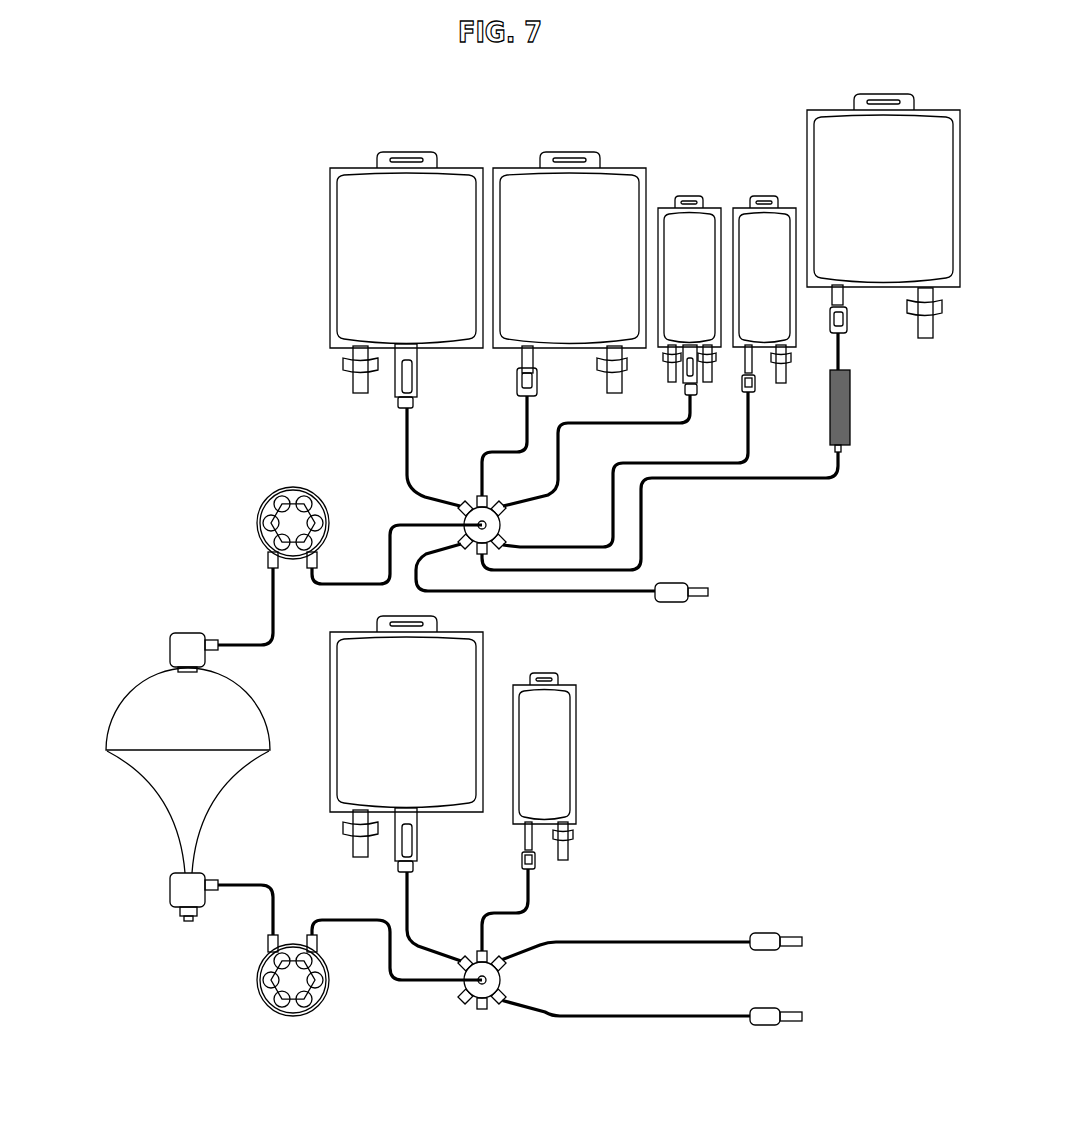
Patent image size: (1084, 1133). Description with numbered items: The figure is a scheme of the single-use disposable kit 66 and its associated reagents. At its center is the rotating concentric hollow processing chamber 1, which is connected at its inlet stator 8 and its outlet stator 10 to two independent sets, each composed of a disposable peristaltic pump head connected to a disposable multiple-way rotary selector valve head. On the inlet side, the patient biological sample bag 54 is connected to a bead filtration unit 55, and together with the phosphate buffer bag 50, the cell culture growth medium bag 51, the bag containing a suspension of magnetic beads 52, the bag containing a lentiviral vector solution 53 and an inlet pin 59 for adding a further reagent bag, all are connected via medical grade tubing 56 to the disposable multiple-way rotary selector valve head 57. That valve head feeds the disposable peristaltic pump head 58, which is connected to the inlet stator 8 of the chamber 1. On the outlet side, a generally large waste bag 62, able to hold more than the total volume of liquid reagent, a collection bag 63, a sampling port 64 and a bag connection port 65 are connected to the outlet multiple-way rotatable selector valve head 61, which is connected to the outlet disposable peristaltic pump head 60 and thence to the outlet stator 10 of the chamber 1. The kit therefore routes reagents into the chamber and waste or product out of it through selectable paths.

The rotating concentric hollow processing chamber 1 is at (115, 705).
The inlet stator 8 is at (170, 648).
The outlet stator 10 is at (170, 890).
The phosphate buffer bag 50 is at (343, 218).
The cell culture growth medium bag 51 is at (532, 182).
The bag containing a suspension of magnetic beads 52 is at (712, 223).
The bag containing a lentiviral vector solution 53 is at (784, 220).
The patient biological sample bag 54 is at (823, 110).
The bead filtration unit 55 is at (848, 397).
The medical grade tubing 56 is at (837, 473).
The disposable multiple-way rotary selector valve head 57 is at (497, 527).
The disposable peristaltic pump head 58 is at (258, 520).
The inlet pin 59 is at (712, 592).
The outlet disposable peristaltic pump head 60 is at (255, 985).
The outlet multiple-way rotatable selector valve head 61 is at (490, 965).
The waste bag 62 is at (470, 652).
The collection bag 63 is at (565, 722).
The sampling port 64 is at (806, 940).
The bag connection port 65 is at (806, 1016).
The disposable kit 66 is at (358, 475).